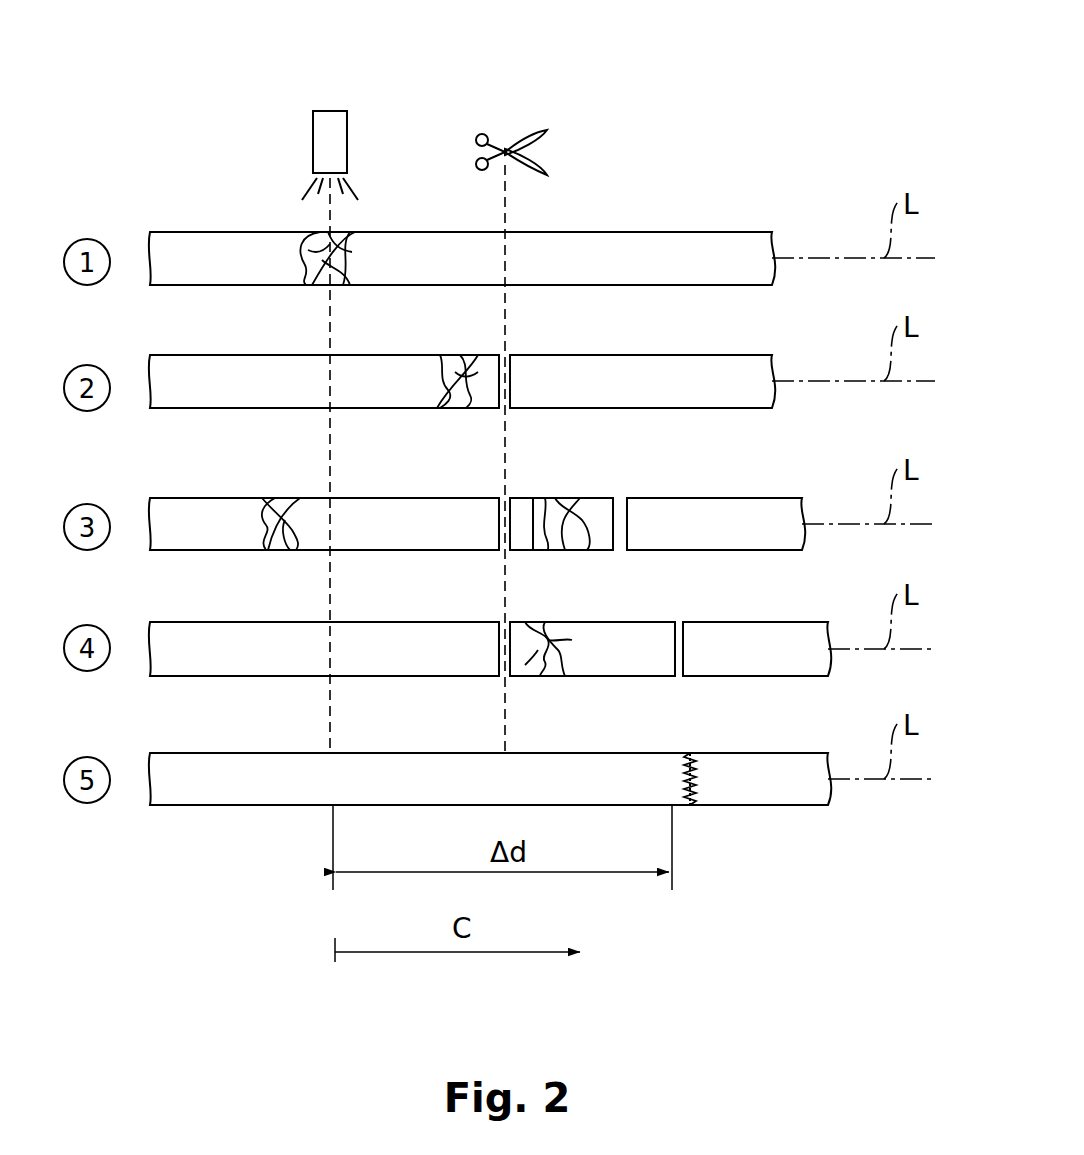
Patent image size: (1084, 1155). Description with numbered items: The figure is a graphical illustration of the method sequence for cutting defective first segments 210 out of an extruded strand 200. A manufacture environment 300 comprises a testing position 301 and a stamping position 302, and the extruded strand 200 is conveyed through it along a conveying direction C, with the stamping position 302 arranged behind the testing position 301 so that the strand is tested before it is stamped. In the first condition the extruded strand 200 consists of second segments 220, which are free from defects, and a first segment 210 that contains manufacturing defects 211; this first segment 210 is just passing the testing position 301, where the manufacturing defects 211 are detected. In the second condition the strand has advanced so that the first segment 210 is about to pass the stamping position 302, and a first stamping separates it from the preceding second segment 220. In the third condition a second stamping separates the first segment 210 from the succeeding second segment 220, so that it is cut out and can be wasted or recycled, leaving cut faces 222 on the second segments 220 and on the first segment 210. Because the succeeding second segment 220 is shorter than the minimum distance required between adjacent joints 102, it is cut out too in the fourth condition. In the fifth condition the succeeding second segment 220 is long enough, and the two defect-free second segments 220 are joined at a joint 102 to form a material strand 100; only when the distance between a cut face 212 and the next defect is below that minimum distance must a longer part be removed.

The material strand 100 is at (796, 828).
The joint 102 is at (690, 806).
The extruded strand 200 is at (752, 231).
The first segment 210 is at (346, 290).
The manufacturing defect 211 is at (340, 240).
The cut face 212 is at (508, 510).
The second segment 220 is at (228, 231).
The cut face 222 is at (510, 354).
The manufacture environment 300 is at (729, 124).
The testing position 301 is at (333, 118).
The stamping position 302 is at (505, 150).